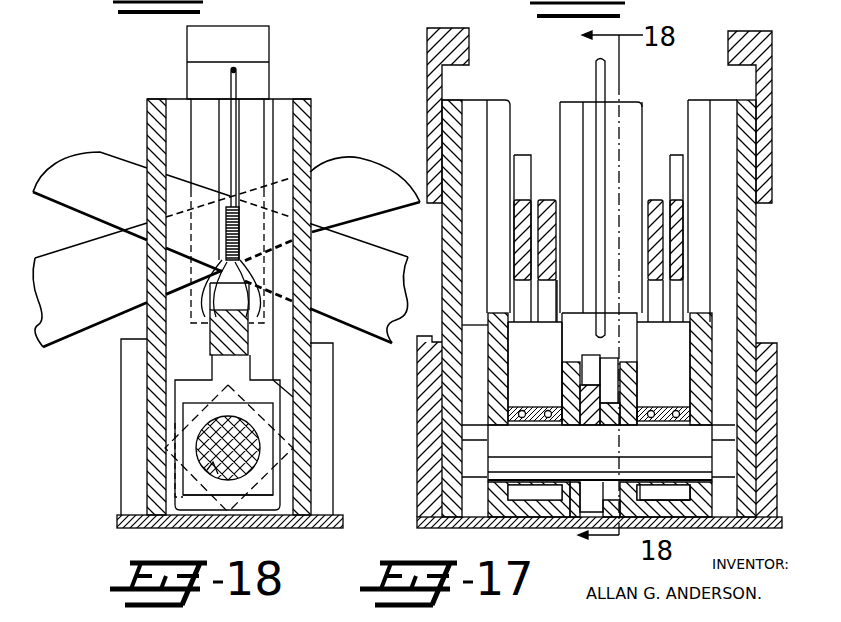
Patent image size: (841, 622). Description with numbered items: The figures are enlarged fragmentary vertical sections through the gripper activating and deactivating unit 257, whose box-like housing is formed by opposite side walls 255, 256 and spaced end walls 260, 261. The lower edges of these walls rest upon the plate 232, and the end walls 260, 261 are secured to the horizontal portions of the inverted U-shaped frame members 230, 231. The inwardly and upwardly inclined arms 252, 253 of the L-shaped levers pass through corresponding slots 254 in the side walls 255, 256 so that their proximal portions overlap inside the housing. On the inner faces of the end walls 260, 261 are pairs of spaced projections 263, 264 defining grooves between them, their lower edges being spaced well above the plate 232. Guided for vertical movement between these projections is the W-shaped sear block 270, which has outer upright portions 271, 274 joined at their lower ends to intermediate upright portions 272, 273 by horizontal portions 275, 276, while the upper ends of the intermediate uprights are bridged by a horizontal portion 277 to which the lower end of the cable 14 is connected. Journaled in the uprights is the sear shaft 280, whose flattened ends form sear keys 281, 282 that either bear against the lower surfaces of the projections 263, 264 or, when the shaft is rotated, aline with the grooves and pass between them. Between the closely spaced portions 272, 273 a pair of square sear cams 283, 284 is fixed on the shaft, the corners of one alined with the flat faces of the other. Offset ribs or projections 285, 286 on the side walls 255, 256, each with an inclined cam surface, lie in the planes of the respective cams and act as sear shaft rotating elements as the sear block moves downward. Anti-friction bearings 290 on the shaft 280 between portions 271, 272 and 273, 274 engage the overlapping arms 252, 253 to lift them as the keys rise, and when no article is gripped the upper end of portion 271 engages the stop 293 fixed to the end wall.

In FIG. 18, the cable 14 is at (237, 74).
In FIG. 17, the cable 14 is at (596, 62).
In FIG. 17, the frame member 230 is at (442, 436).
In FIG. 18, the frame member 231 is at (121, 408).
In FIG. 17, the frame member 231 is at (777, 380).
In FIG. 18, the plate 232 is at (132, 529).
In FIG. 17, the plate 232 is at (440, 529).
In FIG. 18, the arm 252 is at (368, 165).
In FIG. 18, the arm 253 is at (67, 165).
In FIG. 17, the slot 254 is at (538, 104).
In FIG. 18, the side wall 255 is at (147, 117).
In FIG. 18, the side wall 256 is at (311, 117).
In FIG. 17, the side wall 256 is at (514, 100).
In FIG. 18, the gripper activating and deactivating unit 257 is at (313, 99).
In FIG. 17, the gripper activating and deactivating unit 257 is at (772, 40).
In FIG. 17, the end wall 260 is at (442, 292).
In FIG. 17, the end wall 261 is at (757, 289).
In FIG. 18, the projection 263 is at (204, 103).
In FIG. 17, the projection 263 is at (479, 102).
In FIG. 17, the projection 264 is at (719, 104).
In FIG. 18, the sear block 270 is at (203, 505).
In FIG. 17, the sear block 270 is at (672, 514).
In FIG. 17, the upright portion 271 is at (508, 368).
In FIG. 18, the intermediate upright portion 272 is at (213, 365).
In FIG. 17, the intermediate upright portion 272 is at (562, 366).
In FIG. 17, the intermediate upright portion 273 is at (640, 371).
In FIG. 17, the upright portion 274 is at (692, 375).
In FIG. 17, the horizontal portion 275 is at (550, 530).
In FIG. 17, the horizontal portion 276 is at (662, 521).
In FIG. 18, the horizontal portion 277 is at (210, 347).
In FIG. 17, the horizontal portion 277 is at (563, 333).
In FIG. 18, the sear shaft 280 is at (228, 449).
In FIG. 17, the sear shaft 280 is at (600, 453).
In FIG. 17, the sear key 281 is at (730, 457).
In FIG. 18, the sear key 282 is at (208, 472).
In FIG. 17, the sear key 282 is at (465, 462).
In FIG. 18, the sear cam 283 is at (246, 403).
In FIG. 17, the sear cam 283 is at (612, 426).
In FIG. 18, the sear cam 284 is at (220, 397).
In FIG. 17, the sear cam 284 is at (595, 426).
In FIG. 18, the projection 285 is at (170, 483).
In FIG. 18, the projection 286 is at (285, 283).
In FIG. 17, the projection 286 is at (562, 135).
In FIG. 17, the bearing 290 is at (540, 425).
In FIG. 18, the stop 293 is at (270, 31).
In FIG. 17, the stop 293 is at (445, 28).